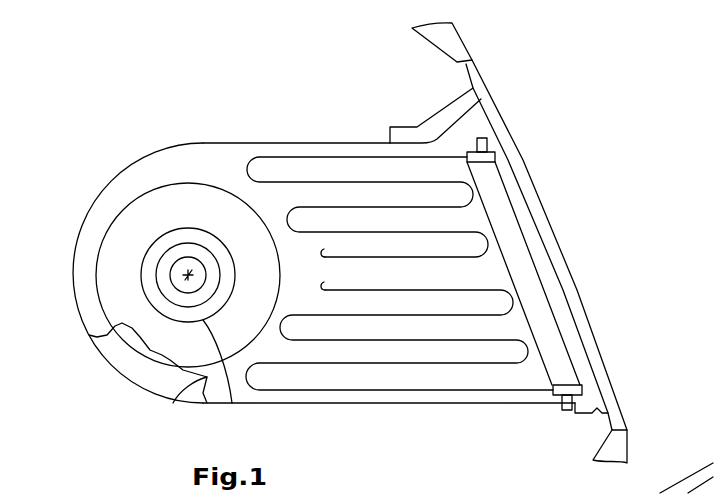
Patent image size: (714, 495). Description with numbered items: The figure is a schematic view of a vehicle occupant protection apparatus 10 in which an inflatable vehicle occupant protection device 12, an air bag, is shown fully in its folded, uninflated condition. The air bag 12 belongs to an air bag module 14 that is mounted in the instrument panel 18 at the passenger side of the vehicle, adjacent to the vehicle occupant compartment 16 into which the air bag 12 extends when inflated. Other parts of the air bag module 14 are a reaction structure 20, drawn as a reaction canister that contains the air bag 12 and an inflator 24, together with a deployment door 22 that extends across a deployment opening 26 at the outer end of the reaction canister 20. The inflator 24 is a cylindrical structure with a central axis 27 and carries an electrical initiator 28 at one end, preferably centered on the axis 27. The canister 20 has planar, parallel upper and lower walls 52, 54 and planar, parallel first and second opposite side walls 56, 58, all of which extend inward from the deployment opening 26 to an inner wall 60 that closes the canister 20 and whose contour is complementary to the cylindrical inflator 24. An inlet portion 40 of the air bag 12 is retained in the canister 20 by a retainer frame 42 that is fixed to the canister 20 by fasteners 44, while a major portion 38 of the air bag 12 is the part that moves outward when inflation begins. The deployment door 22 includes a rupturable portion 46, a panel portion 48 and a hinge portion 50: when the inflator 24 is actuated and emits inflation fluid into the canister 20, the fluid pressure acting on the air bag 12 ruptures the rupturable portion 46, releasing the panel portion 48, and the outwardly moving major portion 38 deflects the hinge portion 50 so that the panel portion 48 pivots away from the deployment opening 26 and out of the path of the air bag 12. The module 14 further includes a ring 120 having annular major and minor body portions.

The vehicle occupant protection apparatus 10 is at (110, 95).
The inflatable vehicle occupant protection device 12 is at (357, 152).
The air bag module 14 is at (186, 138).
The vehicle occupant compartment 16 is at (610, 105).
The instrument panel 18 is at (460, 42).
The reaction structure 20 is at (110, 377).
The deployment door 22 is at (538, 175).
The inflator 24 is at (125, 220).
The deployment opening 26 is at (578, 288).
The central axis 27 is at (204, 250).
The electrical initiator 28 is at (170, 263).
The major portion 38 is at (512, 340).
The inlet portion 40 is at (538, 383).
The retainer frame 42 is at (510, 277).
The fasteners 44 is at (482, 137).
The rupturable portion 46 is at (597, 408).
The panel portion 48 is at (542, 202).
The hinge portion 50 is at (443, 107).
The upper wall 52 is at (242, 143).
The lower wall 54 is at (270, 405).
The first side wall 56 is at (142, 380).
The second side wall 58 is at (183, 406).
The inner wall 60 is at (75, 310).
The ring 120 is at (227, 378).